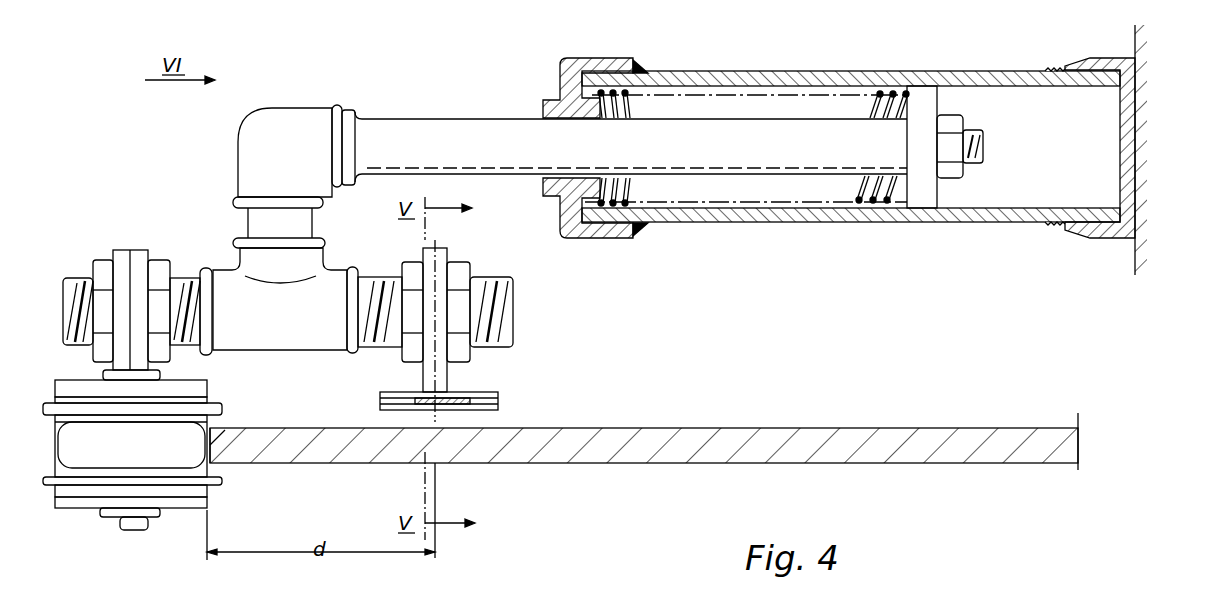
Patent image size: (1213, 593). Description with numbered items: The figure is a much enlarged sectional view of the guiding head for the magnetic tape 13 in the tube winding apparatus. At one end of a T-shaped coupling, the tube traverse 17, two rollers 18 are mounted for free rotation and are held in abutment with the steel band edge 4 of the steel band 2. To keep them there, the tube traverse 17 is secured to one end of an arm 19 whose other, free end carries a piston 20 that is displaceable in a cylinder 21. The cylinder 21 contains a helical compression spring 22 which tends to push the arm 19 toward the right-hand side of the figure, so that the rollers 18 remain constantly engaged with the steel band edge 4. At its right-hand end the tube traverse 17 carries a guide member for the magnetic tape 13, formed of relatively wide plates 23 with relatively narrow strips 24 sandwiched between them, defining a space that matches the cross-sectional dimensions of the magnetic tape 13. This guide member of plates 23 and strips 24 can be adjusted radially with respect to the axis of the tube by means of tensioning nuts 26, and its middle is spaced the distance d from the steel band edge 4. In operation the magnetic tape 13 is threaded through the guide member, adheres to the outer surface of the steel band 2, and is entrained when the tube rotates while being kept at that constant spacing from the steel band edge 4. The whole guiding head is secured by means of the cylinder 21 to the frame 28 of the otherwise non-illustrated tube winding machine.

The steel band 2 is at (742, 430).
The steel band edge 4 is at (212, 452).
The magnetic tape 13 is at (420, 398).
The tube traverse 17 is at (279, 338).
The rollers 18 is at (90, 458).
The arm 19 is at (458, 128).
The piston 20 is at (920, 193).
The cylinder 21 is at (858, 72).
The helical compression spring 22 is at (860, 207).
The plates 23 is at (475, 392).
The strips 24 is at (380, 400).
The tensioning nuts 26 is at (410, 272).
The frame 28 is at (1133, 273).